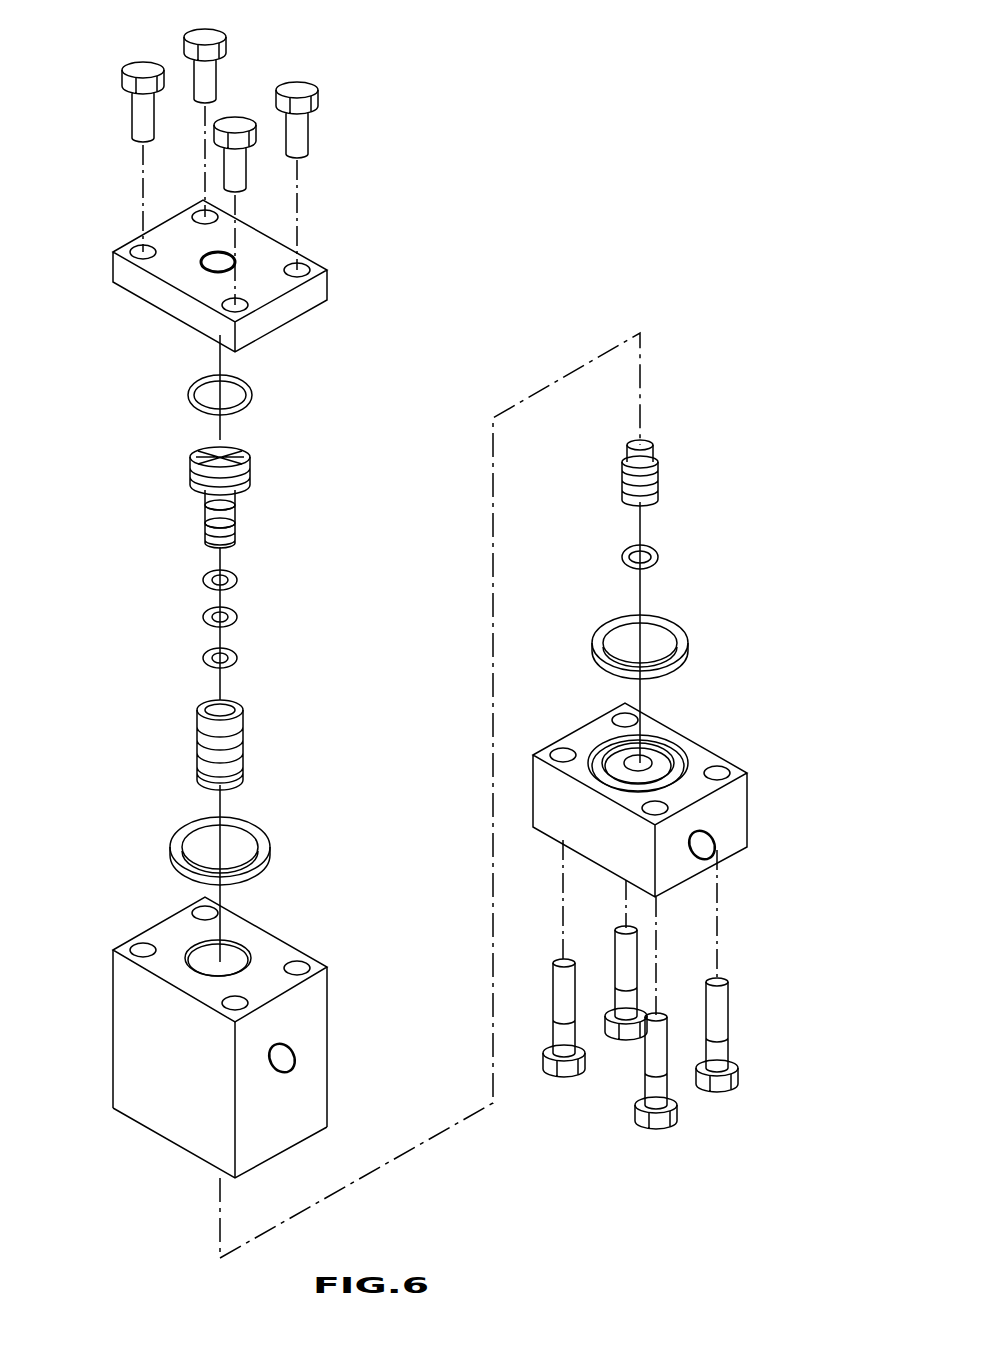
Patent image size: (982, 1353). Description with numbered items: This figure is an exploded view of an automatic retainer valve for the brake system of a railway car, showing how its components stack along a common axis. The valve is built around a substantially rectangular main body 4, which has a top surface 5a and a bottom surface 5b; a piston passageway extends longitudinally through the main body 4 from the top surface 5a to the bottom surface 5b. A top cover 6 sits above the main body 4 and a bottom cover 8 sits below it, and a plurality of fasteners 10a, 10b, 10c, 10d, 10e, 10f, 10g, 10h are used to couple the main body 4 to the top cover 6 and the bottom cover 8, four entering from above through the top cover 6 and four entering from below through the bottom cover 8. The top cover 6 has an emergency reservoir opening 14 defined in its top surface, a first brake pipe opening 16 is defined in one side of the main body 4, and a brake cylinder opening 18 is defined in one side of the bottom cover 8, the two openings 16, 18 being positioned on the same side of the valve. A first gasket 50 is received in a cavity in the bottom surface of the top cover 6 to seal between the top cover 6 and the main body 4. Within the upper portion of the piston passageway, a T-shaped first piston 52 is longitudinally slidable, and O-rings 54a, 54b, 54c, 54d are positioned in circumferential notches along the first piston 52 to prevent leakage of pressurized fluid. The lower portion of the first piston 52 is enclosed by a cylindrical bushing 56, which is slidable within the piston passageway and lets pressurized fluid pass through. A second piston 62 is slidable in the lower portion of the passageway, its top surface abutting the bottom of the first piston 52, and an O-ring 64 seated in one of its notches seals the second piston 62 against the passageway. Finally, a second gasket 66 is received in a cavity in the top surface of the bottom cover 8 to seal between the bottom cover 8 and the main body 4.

The main body 4 is at (239, 1037).
The top surface of main body 5a is at (262, 935).
The bottom surface of main body 5b is at (158, 1137).
The top cover 6 is at (236, 276).
The bottom cover 8 is at (663, 800).
The fastener 10a is at (205, 32).
The fastener 10b is at (298, 86).
The fastener 10c is at (235, 118).
The fastener 10d is at (137, 68).
The fastener 10e is at (617, 1038).
The fastener 10f is at (730, 1083).
The fastener 10g is at (667, 1122).
The fastener 10h is at (555, 1070).
The emergency reservoir opening 14 is at (200, 262).
The first brake pipe opening 16 is at (713, 840).
The brake cylinder opening 18 is at (293, 1053).
The first gasket 50 is at (270, 843).
The first piston 52 is at (252, 467).
The O-ring 54a is at (252, 400).
The O-ring 54b is at (236, 583).
The O-ring 54c is at (237, 617).
The O-ring 54d is at (237, 658).
The bushing 56 is at (245, 727).
The second piston 62 is at (657, 463).
The O-ring 64 is at (658, 557).
The second gasket 66 is at (690, 648).